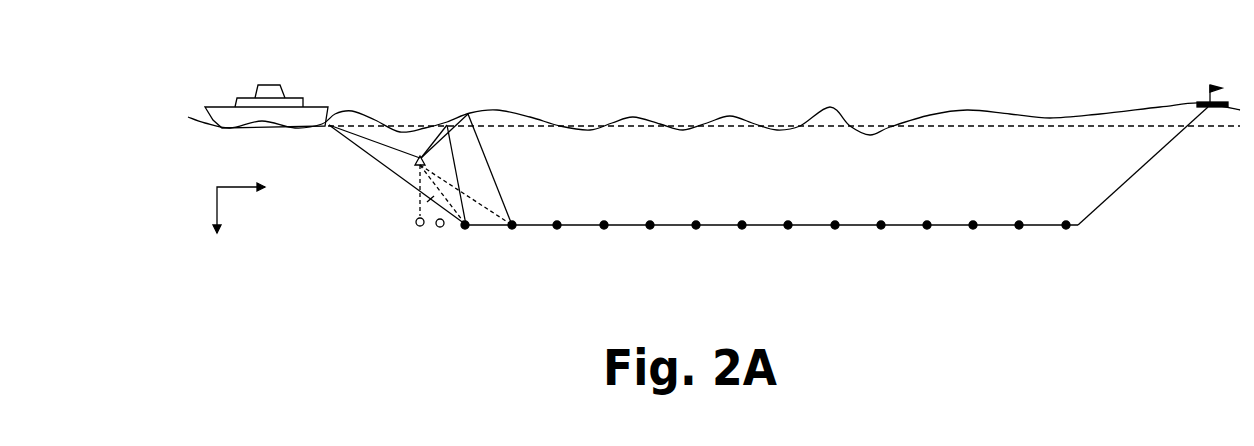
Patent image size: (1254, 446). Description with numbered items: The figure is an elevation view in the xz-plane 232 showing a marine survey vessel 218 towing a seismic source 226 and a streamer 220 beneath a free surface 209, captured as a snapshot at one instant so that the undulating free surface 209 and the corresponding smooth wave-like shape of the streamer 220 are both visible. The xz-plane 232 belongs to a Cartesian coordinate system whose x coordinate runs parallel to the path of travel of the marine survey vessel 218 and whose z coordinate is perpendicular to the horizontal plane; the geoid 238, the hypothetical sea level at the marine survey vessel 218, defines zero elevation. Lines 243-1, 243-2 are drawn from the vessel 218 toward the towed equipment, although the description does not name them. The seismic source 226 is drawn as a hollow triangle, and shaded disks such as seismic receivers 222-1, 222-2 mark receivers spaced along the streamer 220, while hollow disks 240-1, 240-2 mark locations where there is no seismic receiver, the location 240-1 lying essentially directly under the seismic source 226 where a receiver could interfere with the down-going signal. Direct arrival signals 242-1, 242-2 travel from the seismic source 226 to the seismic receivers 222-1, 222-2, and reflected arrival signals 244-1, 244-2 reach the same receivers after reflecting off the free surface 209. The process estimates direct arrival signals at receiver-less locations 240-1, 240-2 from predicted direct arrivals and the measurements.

The marine survey vessel 218 is at (215, 105).
The free surface 209 is at (952, 110).
The seismic source 226 is at (418, 155).
The xz-plane 232 is at (227, 198).
The tow line 243-1 is at (415, 172).
The tow line 243-2 is at (430, 199).
The reflected arrival signal 244-1 is at (473, 124).
The reflected arrival signal 244-2 is at (478, 138).
The direct arrival signal 242-1 is at (458, 170).
The direct arrival signal 242-2 is at (480, 200).
The location 240-1 is at (417, 226).
The location 240-2 is at (438, 227).
The seismic receiver 222-1 is at (463, 228).
The seismic receiver 222-2 is at (512, 228).
The streamer 220 is at (992, 228).
The geoid 238 is at (1227, 132).